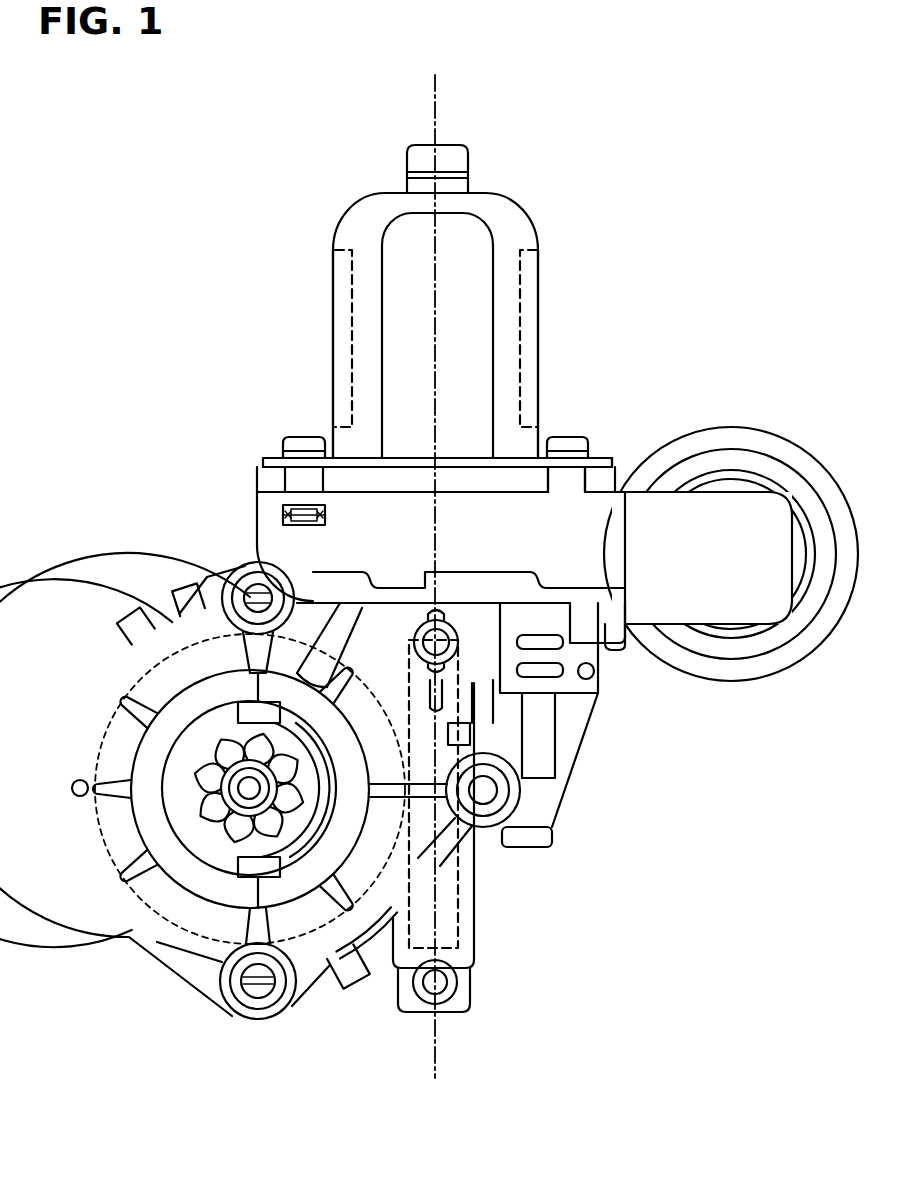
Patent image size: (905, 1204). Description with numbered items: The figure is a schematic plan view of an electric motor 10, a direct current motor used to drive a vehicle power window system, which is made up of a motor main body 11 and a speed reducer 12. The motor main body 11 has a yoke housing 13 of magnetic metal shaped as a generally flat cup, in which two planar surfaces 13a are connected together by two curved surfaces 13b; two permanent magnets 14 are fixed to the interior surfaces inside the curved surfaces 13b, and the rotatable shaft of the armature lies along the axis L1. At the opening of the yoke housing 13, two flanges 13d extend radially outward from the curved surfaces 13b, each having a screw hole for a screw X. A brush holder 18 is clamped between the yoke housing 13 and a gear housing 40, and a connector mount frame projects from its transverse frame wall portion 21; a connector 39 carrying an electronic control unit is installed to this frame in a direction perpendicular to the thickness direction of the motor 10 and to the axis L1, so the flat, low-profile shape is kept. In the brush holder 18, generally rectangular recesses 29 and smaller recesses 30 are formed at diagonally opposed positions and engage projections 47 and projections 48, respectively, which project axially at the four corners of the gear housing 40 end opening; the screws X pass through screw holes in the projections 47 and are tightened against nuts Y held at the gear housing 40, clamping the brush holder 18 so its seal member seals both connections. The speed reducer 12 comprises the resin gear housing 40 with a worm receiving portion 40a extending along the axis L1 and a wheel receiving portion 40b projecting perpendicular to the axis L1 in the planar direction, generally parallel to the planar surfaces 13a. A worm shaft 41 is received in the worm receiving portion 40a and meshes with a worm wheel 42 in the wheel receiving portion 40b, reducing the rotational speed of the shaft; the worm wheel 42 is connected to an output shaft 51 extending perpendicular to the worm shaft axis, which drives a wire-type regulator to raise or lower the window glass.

The electric motor 10 is at (236, 216).
The motor main body 11 is at (564, 381).
The speed reducer 12 is at (205, 580).
The yoke housing 13 is at (362, 218).
The planar surfaces 13a is at (488, 279).
The curved surfaces 13b is at (333, 328).
The flanges 13d is at (264, 458).
The permanent magnets 14 is at (356, 370).
The brush holder 18 is at (466, 472).
The transverse frame wall portion 21 is at (613, 464).
The recess 29 is at (330, 510).
The recess 30 is at (548, 494).
The connector 39 is at (660, 626).
The gear housing 40 is at (258, 516).
The worm receiving portion 40a is at (470, 936).
The wheel receiving portion 40b is at (132, 918).
The worm shaft 41 is at (460, 904).
The worm wheel 42 is at (130, 686).
The projection 47 is at (284, 480).
The projection 48 is at (585, 484).
The output shaft 51 is at (246, 790).
The axis L1 is at (440, 90).
The screw X is at (304, 438).
The nut Y is at (325, 512).